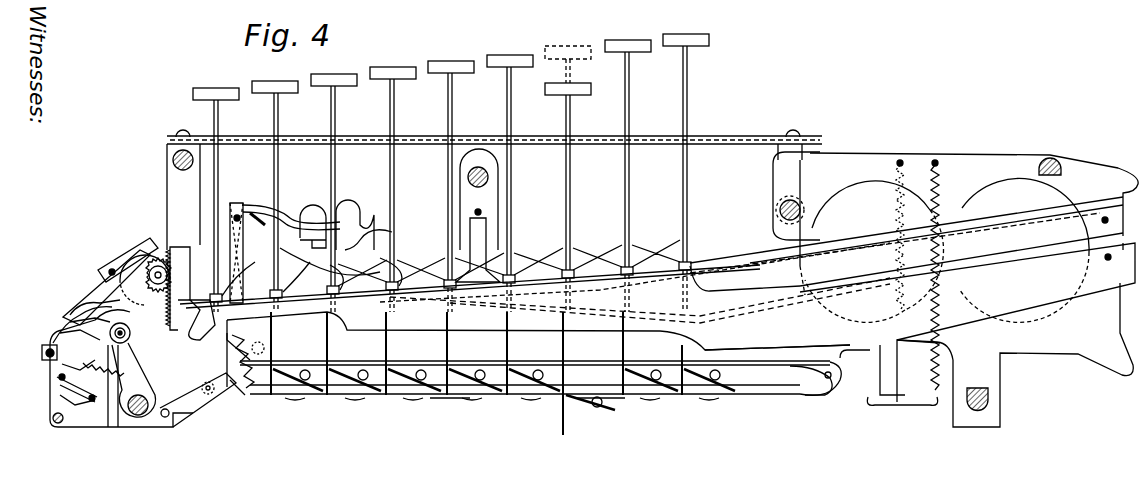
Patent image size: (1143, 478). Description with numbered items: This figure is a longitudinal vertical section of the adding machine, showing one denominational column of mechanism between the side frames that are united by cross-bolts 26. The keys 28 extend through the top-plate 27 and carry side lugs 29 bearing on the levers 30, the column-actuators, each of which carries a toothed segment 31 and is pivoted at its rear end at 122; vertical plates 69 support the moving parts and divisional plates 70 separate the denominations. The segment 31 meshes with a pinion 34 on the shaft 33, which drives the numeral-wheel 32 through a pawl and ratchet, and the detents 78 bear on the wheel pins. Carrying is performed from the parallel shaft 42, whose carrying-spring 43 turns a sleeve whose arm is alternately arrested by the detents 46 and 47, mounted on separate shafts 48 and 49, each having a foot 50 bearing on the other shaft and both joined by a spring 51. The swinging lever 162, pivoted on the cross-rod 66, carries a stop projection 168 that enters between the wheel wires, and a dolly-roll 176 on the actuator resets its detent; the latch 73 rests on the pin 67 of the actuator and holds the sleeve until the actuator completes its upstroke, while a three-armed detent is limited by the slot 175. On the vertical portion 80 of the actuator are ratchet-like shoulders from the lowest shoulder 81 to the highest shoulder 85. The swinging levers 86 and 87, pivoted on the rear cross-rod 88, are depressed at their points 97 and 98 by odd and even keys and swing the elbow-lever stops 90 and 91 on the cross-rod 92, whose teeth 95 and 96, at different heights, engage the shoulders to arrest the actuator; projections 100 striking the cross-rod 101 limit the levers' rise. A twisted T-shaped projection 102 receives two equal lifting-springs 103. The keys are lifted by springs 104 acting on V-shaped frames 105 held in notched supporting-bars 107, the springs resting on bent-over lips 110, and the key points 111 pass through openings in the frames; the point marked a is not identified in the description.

The cross-bolts 26 is at (173, 160).
The top-plate 27 is at (352, 134).
The keys 28 is at (331, 108).
The side lugs 29 is at (682, 227).
The levers 30 is at (558, 314).
The toothed segments 31 is at (171, 268).
The numeral-wheels 32 is at (168, 247).
The shaft 33 is at (112, 263).
The pinion 34 is at (156, 266).
The shaft 42 is at (120, 345).
The spring 43 is at (70, 322).
The detent 46 is at (78, 308).
The detent 47 is at (140, 425).
The shaft 48 is at (45, 358).
The shaft 49 is at (96, 395).
The foot 50 is at (88, 400).
The spring 51 is at (108, 430).
The cross-rod 66 is at (108, 271).
The pin 67 is at (175, 427).
The vertical plates 69 is at (62, 400).
The divisional plates 70 is at (661, 289).
The latch 73 is at (60, 333).
The detents 78 is at (132, 256).
The vertical portion 80 is at (236, 332).
The shoulder 81 is at (262, 332).
The shoulder 85 is at (246, 398).
The swinging lever 86 is at (906, 241).
The swinging lever 87 is at (608, 256).
The cross-rod 88 is at (1104, 219).
The stop 90 is at (290, 208).
The stop 91 is at (363, 209).
The cross-rod 92 is at (239, 213).
The tooth 95 is at (228, 355).
The tooth 96 is at (266, 350).
The points 97 is at (515, 252).
The points 98 is at (632, 262).
The projections 100 is at (468, 214).
The cross-rod 101 is at (484, 213).
The downward projection 102 is at (898, 408).
The lifting-spring 103 is at (948, 341).
The springs 104 is at (362, 395).
The V-shaped frames 105 is at (622, 400).
The supporting-bars 107 is at (815, 398).
The bent-over lips 110 is at (745, 380).
The points 111 is at (440, 398).
The pivot 122 is at (967, 291).
The swinging lever 162 is at (100, 286).
The stop projection 168 is at (192, 280).
The slot 175 is at (106, 375).
The dolly-roll 176 is at (216, 405).
The pin a is at (57, 362).